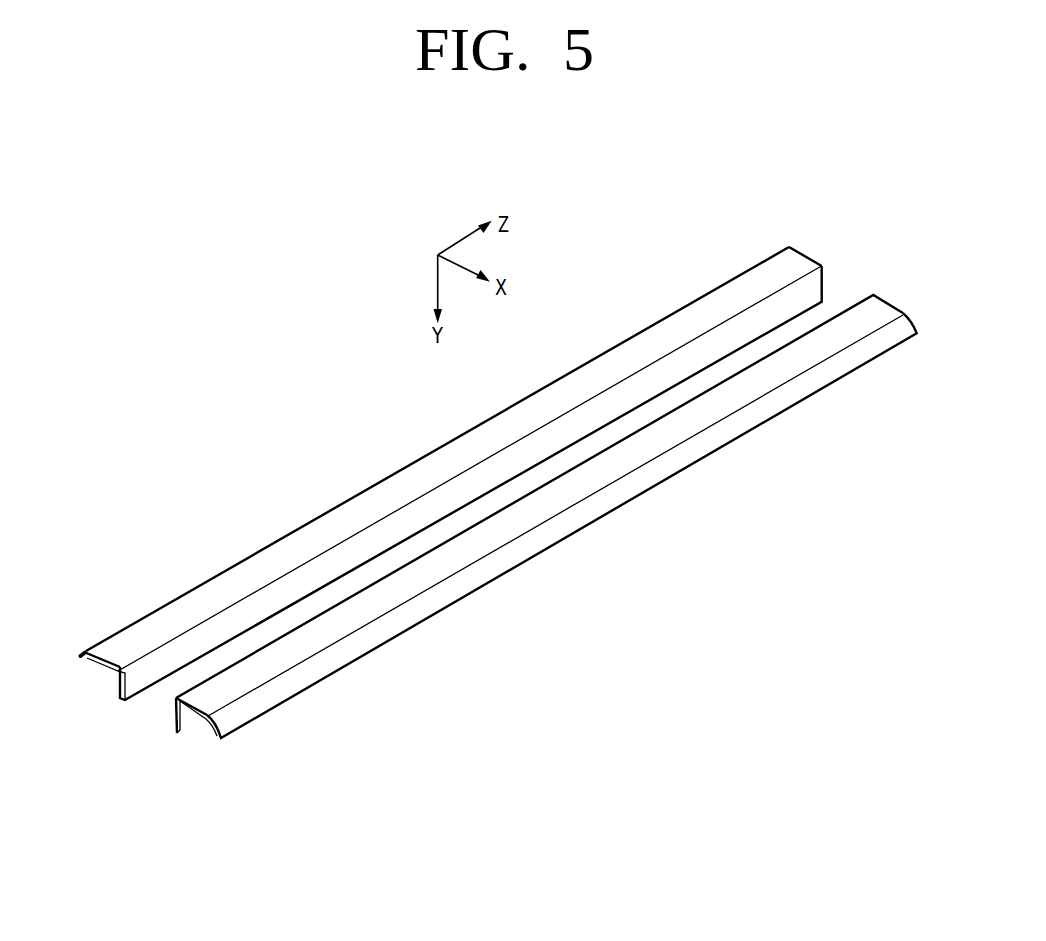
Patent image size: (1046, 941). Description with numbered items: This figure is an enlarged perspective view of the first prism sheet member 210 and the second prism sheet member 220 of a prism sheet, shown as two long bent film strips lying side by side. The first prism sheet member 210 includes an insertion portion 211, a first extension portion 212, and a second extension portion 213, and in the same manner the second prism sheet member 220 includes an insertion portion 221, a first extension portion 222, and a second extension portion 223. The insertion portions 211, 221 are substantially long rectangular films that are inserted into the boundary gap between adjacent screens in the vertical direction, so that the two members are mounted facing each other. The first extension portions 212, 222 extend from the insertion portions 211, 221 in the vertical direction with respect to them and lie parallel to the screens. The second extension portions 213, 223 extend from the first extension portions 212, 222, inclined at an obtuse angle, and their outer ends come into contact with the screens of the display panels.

The first prism sheet member 210 is at (450, 532).
The insertion portion 211 is at (140, 682).
The first extension portion 212 is at (110, 663).
The second extension portion 213 is at (82, 648).
The second prism sheet member 220 is at (527, 546).
The insertion portion 221 is at (178, 720).
The first extension portion 222 is at (203, 703).
The second extension portion 223 is at (248, 710).